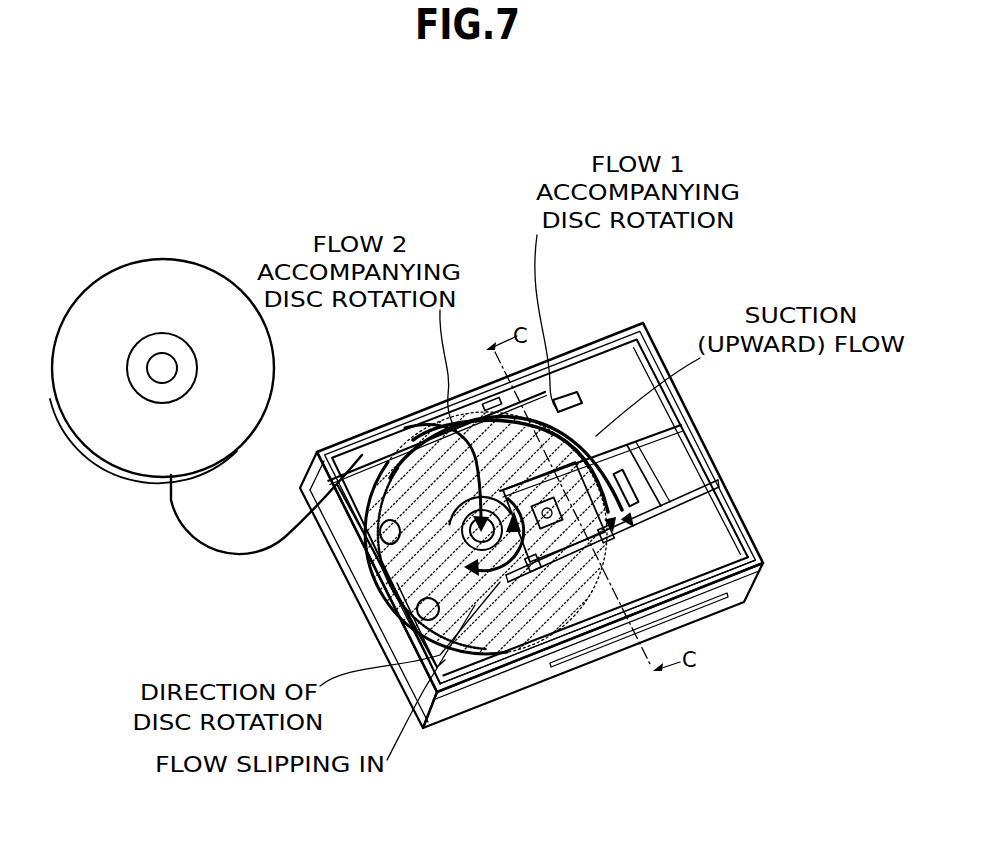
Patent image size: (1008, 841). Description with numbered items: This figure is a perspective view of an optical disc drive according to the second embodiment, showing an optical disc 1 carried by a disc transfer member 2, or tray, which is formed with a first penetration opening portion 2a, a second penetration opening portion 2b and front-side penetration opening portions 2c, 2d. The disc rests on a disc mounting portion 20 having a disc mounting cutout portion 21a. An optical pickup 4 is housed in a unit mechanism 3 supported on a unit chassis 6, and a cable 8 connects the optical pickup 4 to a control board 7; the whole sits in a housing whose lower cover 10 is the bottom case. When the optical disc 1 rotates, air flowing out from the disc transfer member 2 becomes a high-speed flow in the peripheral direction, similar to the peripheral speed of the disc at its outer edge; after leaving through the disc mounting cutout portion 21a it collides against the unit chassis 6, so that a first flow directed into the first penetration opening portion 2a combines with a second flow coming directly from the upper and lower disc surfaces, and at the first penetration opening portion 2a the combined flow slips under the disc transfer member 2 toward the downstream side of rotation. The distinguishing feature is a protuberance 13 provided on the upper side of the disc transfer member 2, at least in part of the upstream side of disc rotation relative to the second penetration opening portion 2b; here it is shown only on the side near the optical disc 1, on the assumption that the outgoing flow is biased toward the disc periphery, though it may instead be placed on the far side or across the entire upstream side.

The optical disc 1 is at (105, 292).
The disc transfer member 2 is at (468, 655).
The first penetration opening portion 2a is at (650, 490).
The second penetration opening portion 2b is at (560, 400).
The front-side penetration opening portion 2c is at (400, 577).
The front-side penetration opening portion 2d is at (357, 535).
The optical pickup 3 is at (522, 595).
The optical pickup 4 is at (423, 453).
The unit chassis 6 is at (594, 628).
The control board 7 is at (637, 648).
The cable 8 is at (625, 468).
The lower cover 10 is at (730, 612).
The protuberance 13 is at (486, 401).
The disc mounting portion 20 is at (573, 630).
The disc mounting cutout portion 21a is at (398, 428).